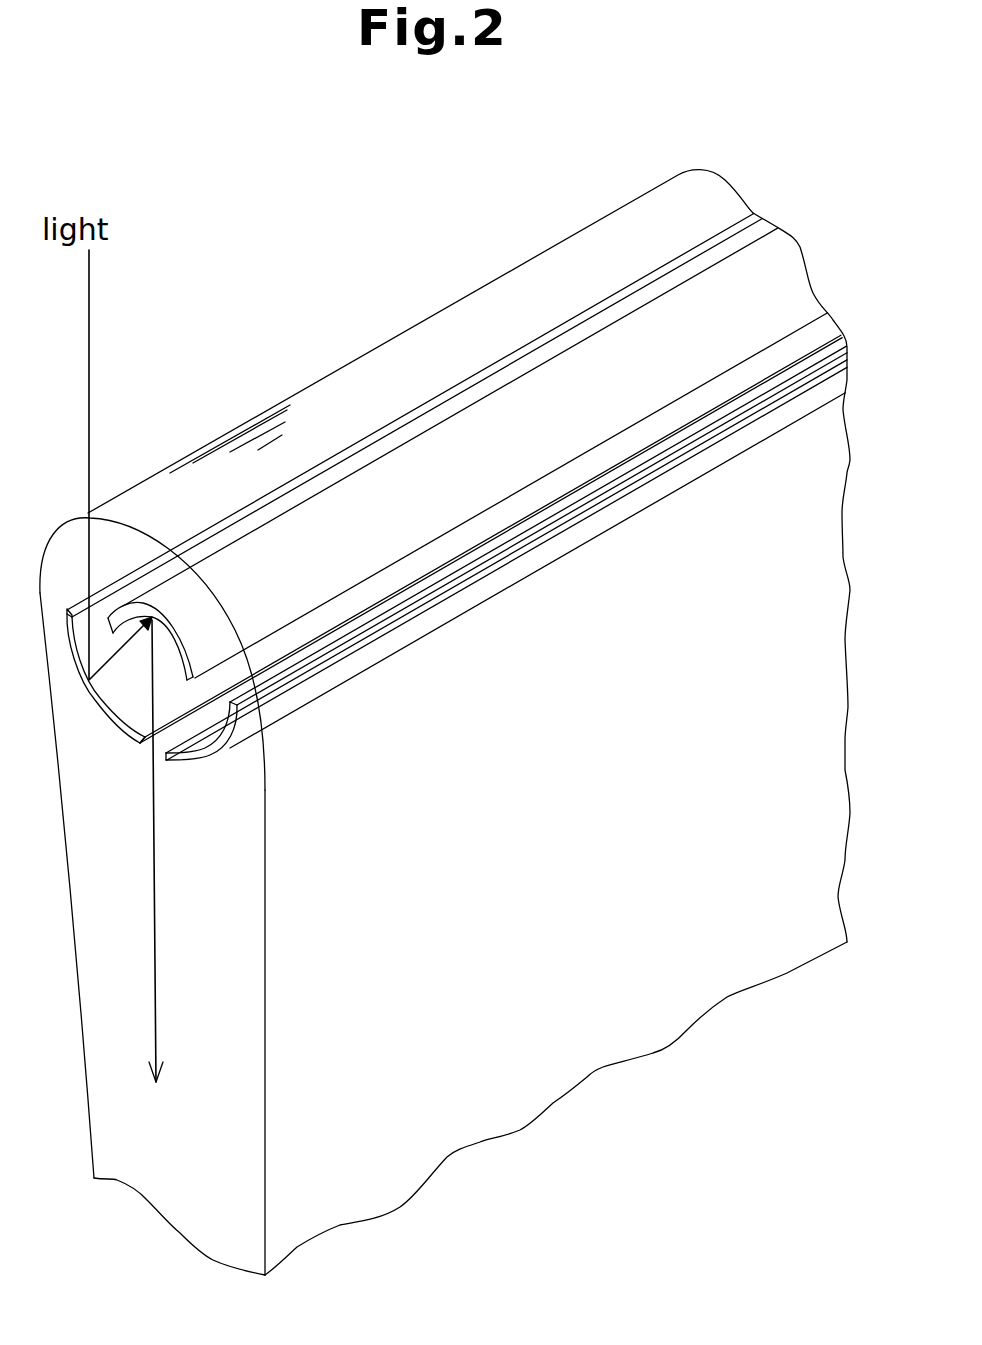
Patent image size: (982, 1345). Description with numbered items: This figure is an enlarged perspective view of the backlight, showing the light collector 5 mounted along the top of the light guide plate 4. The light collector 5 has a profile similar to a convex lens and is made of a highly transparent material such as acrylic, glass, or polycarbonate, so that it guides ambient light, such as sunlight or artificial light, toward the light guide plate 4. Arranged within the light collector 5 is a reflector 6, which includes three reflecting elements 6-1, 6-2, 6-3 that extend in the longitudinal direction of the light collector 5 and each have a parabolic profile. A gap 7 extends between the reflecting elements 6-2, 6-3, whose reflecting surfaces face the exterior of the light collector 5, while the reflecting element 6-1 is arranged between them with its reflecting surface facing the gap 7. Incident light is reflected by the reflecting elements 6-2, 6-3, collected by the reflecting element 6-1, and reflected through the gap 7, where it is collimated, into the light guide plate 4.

The light guide plate 4 is at (822, 771).
The light collector 5 is at (490, 328).
The reflector 6 is at (197, 877).
The reflecting element 6-1 is at (492, 478).
The reflecting element 6-2 is at (173, 698).
The reflecting element 6-3 is at (353, 655).
The gap 7 is at (145, 750).